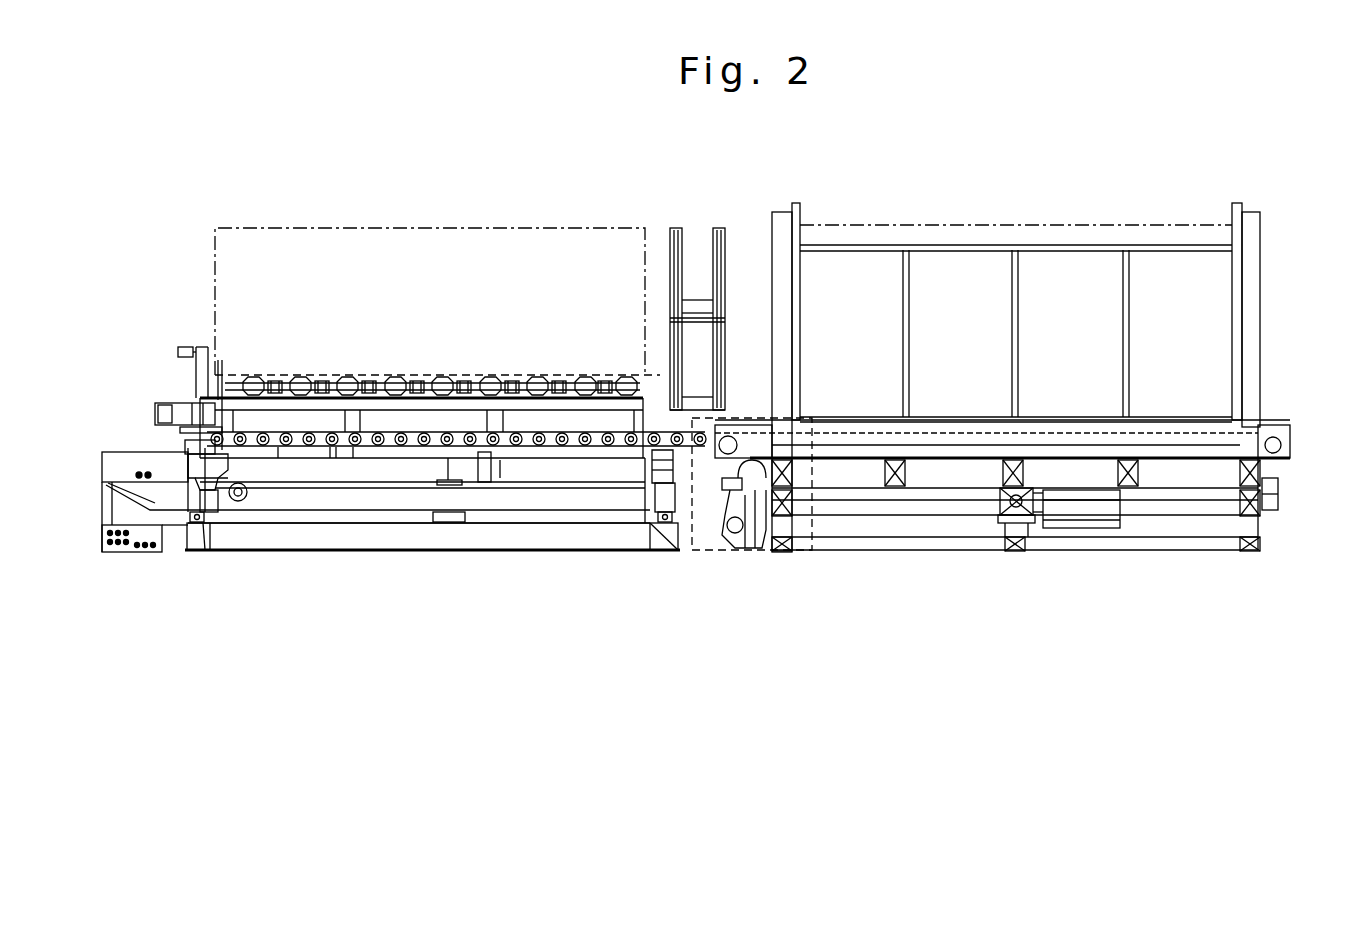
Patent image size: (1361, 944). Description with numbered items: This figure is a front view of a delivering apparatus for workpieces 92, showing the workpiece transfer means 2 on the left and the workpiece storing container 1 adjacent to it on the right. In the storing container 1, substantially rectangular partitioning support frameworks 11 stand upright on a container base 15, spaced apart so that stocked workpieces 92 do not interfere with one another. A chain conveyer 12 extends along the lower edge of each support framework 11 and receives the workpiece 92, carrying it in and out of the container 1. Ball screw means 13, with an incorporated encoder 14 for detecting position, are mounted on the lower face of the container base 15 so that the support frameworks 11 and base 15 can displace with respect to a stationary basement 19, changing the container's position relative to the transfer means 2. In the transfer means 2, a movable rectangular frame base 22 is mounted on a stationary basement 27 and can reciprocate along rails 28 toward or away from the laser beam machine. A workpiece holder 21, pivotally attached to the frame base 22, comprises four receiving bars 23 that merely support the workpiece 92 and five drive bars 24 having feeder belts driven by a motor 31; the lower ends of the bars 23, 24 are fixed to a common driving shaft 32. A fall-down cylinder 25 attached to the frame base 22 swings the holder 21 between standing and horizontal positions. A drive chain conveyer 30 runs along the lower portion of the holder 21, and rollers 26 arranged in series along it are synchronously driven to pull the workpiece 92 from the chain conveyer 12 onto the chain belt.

The workpiece storing container 1 is at (1272, 229).
The workpiece transfer means 2 is at (206, 333).
The partitioning support frameworks 11 is at (1015, 247).
The chain conveyer 12 is at (1207, 437).
The ball screw means 13 is at (992, 503).
The encoder 14 is at (1055, 510).
The container base 15 is at (1260, 473).
The stationary basement 19 is at (1260, 518).
The workpiece holder 21 is at (482, 378).
The movable rectangular frame base 22 is at (188, 498).
The receiving bars 23 is at (297, 378).
The drive bars 24 is at (613, 378).
The fall-down cylinder 25 is at (450, 518).
The rollers 26 is at (355, 442).
The stationary basement 27 is at (236, 540).
The rails 28 is at (203, 528).
The drive chain conveyer 30 is at (275, 445).
The motor 31 is at (158, 402).
The common driving shaft 32 is at (397, 376).
The workpiece 92 is at (249, 236).